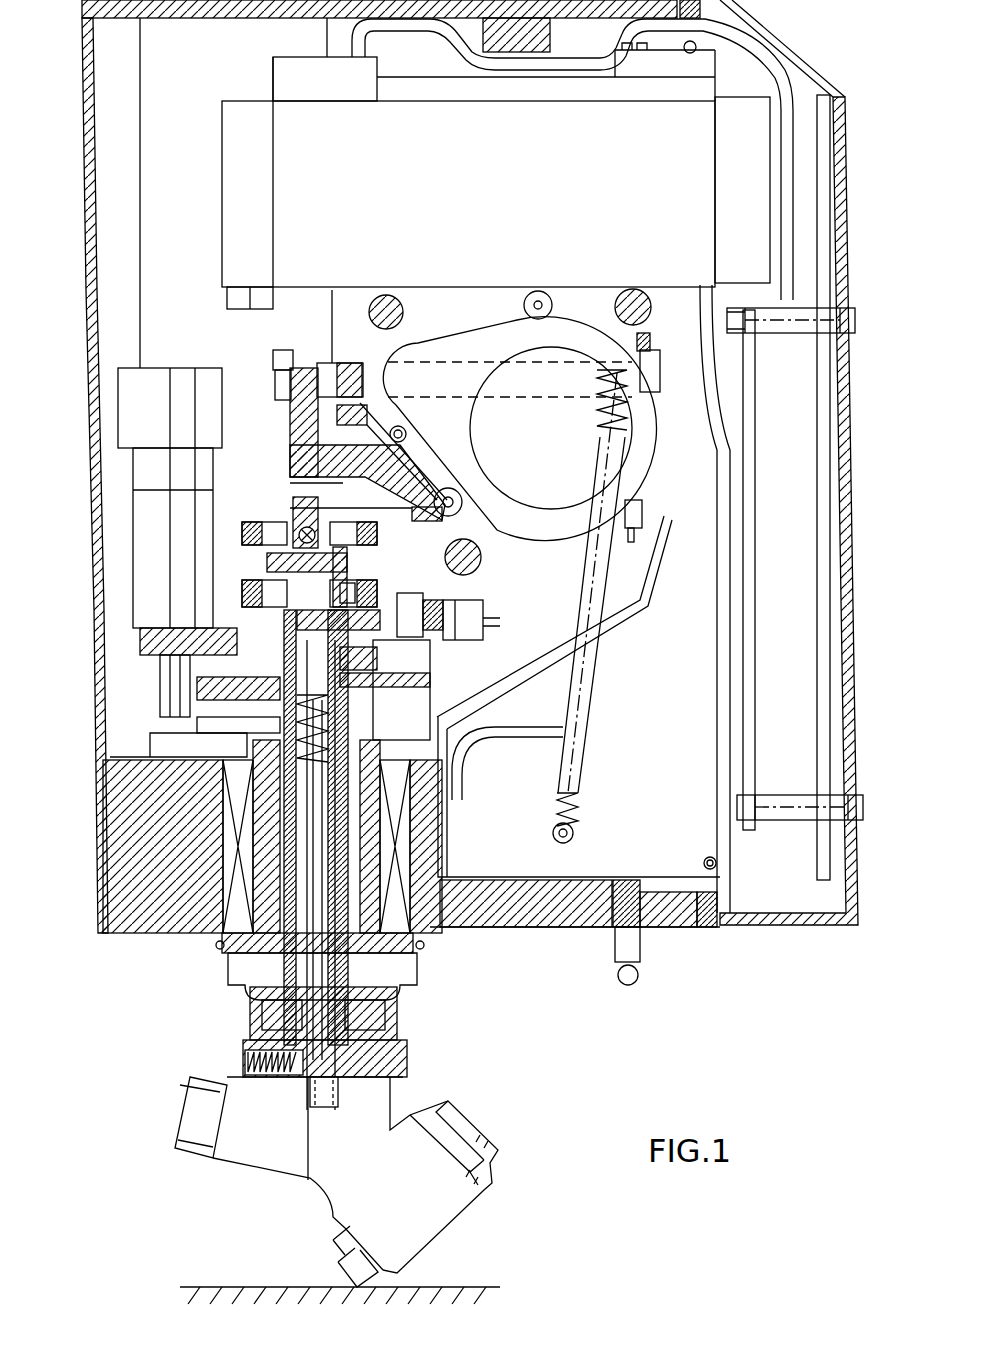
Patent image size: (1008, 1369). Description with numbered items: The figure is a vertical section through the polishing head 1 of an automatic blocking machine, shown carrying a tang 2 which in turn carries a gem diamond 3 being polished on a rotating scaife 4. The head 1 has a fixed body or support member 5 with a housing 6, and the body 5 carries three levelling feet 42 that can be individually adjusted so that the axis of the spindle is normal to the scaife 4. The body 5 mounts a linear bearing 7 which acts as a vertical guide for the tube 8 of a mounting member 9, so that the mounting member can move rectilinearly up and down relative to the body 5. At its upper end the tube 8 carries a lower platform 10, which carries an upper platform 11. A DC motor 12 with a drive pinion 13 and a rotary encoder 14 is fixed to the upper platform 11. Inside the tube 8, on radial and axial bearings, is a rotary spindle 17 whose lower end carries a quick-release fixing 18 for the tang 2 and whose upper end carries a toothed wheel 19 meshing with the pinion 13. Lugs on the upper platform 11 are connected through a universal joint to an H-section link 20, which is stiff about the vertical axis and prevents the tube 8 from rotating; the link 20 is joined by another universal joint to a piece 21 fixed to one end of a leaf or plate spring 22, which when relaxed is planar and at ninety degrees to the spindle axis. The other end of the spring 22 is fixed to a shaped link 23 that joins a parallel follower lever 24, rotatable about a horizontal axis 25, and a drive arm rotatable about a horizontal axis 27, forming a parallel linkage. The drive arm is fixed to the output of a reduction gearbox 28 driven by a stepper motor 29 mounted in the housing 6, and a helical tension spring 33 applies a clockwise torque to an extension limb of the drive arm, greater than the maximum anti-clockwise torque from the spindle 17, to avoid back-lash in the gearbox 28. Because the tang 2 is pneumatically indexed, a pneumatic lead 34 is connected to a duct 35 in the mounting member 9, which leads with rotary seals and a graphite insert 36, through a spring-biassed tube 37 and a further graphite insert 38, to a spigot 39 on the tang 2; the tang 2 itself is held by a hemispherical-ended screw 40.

The polishing head 1 is at (92, 586).
The tang 2 is at (380, 1098).
The gem diamond 3 is at (330, 1280).
The scaife 4 is at (270, 1287).
The fixed body or support member 5 is at (120, 800).
The housing 6 is at (795, 923).
The linear bearing 7 is at (240, 895).
The tube 8 is at (240, 820).
The mounting member 9 is at (248, 1015).
The lower platform 10 is at (185, 740).
The upper platform 11 is at (140, 638).
The DC motor 12 is at (213, 470).
The drive pinion 13 is at (160, 683).
The rotary encoder 14 is at (176, 368).
The rotary spindle 17 is at (255, 945).
The quick-release fixing 18 is at (405, 1052).
The toothed wheel 19 is at (440, 690).
The H-section link 20 is at (345, 560).
The piece 21 is at (292, 505).
The leaf or plate spring 22 is at (410, 515).
The shaped link 23 is at (290, 405).
The parallel follower lever 24 is at (410, 455).
The horizontal axis 25 is at (345, 365).
The horizontal axis 27 is at (442, 380).
The reduction gearbox 28 is at (544, 434).
The stepper motor 29 is at (552, 510).
The helical tension spring 33 is at (580, 808).
The pneumatic lead 34 is at (485, 615).
The duct 35 is at (400, 660).
The graphite insert 36 is at (445, 705).
The spring-biassed tube 37 is at (245, 985).
The further graphite insert 38 is at (262, 1032).
The spigot 39 is at (292, 1080).
The hemispherical-ended screw 40 is at (275, 1075).
The levelling feet 42 is at (632, 985).